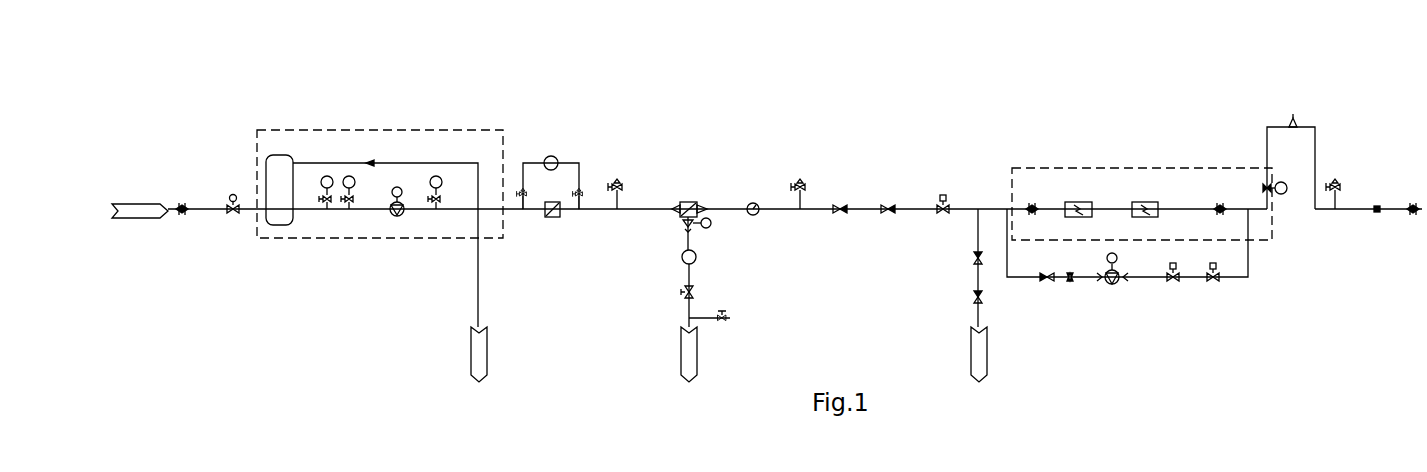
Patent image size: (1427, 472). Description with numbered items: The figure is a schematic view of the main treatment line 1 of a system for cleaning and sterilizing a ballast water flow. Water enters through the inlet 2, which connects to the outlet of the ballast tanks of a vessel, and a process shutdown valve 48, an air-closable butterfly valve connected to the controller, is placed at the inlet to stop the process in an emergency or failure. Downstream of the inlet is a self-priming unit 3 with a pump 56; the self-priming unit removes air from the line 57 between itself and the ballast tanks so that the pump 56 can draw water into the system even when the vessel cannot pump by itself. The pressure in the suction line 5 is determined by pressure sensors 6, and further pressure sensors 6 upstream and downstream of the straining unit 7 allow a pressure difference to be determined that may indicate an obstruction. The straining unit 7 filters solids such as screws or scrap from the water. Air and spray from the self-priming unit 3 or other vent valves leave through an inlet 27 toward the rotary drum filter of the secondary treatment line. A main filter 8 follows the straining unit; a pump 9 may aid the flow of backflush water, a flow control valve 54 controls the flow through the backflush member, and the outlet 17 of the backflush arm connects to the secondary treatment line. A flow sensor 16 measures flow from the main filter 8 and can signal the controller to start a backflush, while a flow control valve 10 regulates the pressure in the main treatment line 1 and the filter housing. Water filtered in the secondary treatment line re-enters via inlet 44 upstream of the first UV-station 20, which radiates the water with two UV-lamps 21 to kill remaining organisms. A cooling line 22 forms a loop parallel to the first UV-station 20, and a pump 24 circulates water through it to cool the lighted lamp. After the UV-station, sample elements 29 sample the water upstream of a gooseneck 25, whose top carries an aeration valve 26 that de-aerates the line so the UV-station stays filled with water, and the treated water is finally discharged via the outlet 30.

The main treatment line 1 is at (893, 63).
The inlet 2 is at (133, 208).
The line 57 is at (197, 208).
The process shutdown valve 48 is at (230, 207).
The self-priming unit 3 is at (363, 129).
The suction line 5 is at (305, 211).
The pressure sensors 6 is at (327, 211).
The pump 56 is at (392, 218).
The inlet 27 is at (475, 348).
The straining unit 7 is at (557, 203).
The sample elements 29 is at (615, 173).
The main filter 8 is at (685, 202).
The pump 9 is at (682, 224).
The flow control valve 54 is at (683, 290).
The outlet 17 is at (688, 348).
The flow sensor 16 is at (753, 203).
The flow control valve 10 is at (940, 195).
The cooling line 22 is at (975, 263).
The inlet 44 is at (975, 340).
The first UV-station 20 is at (1032, 168).
The UV-lamps 21 is at (1133, 202).
The pump 24 is at (1112, 285).
The gooseneck 25 is at (1317, 143).
The aeration valve 26 is at (1293, 114).
The outlet 30 is at (1393, 207).